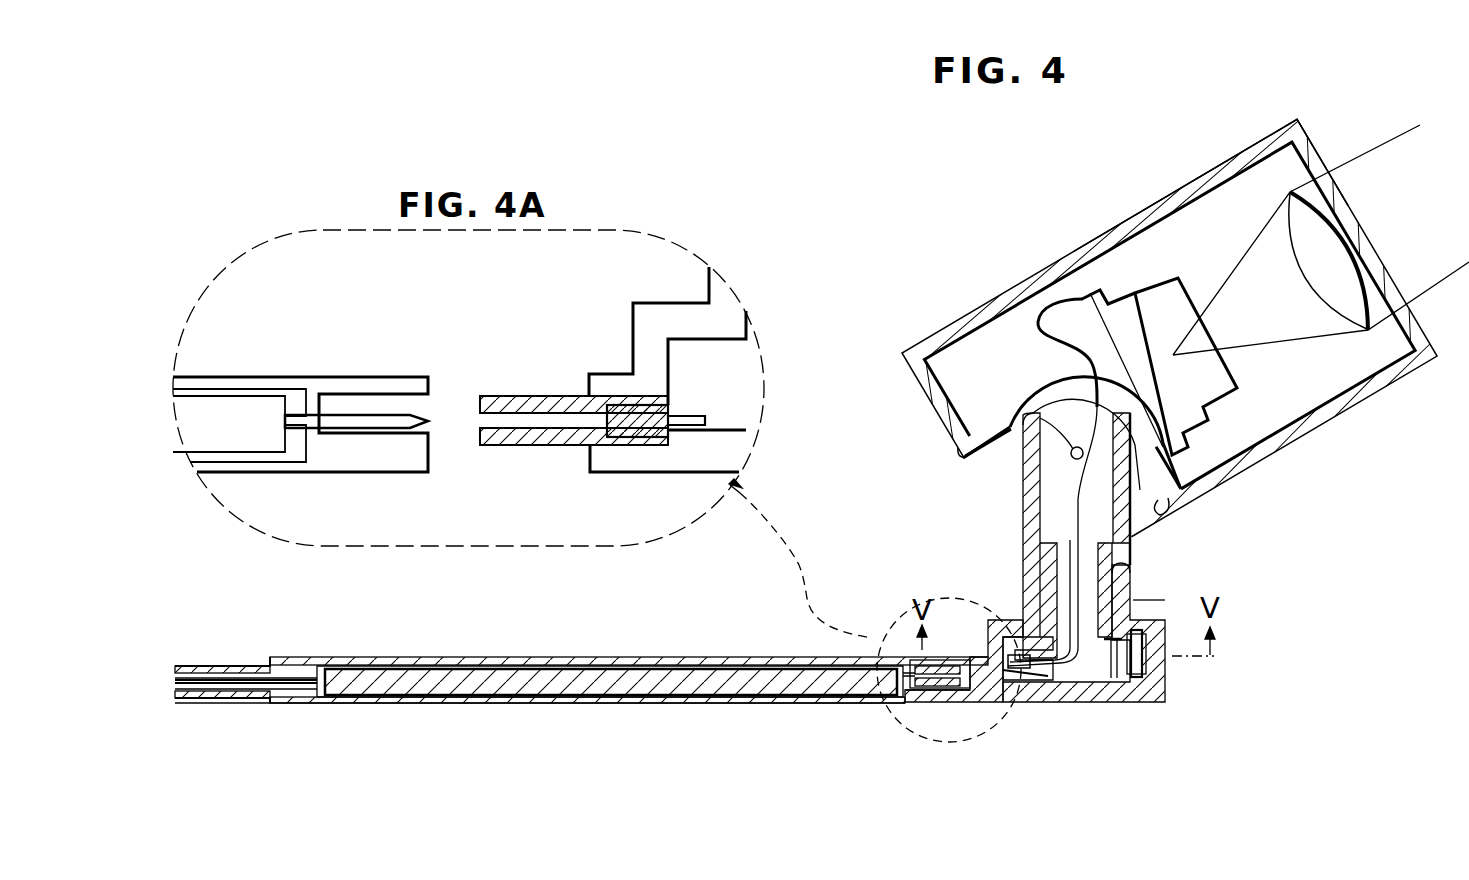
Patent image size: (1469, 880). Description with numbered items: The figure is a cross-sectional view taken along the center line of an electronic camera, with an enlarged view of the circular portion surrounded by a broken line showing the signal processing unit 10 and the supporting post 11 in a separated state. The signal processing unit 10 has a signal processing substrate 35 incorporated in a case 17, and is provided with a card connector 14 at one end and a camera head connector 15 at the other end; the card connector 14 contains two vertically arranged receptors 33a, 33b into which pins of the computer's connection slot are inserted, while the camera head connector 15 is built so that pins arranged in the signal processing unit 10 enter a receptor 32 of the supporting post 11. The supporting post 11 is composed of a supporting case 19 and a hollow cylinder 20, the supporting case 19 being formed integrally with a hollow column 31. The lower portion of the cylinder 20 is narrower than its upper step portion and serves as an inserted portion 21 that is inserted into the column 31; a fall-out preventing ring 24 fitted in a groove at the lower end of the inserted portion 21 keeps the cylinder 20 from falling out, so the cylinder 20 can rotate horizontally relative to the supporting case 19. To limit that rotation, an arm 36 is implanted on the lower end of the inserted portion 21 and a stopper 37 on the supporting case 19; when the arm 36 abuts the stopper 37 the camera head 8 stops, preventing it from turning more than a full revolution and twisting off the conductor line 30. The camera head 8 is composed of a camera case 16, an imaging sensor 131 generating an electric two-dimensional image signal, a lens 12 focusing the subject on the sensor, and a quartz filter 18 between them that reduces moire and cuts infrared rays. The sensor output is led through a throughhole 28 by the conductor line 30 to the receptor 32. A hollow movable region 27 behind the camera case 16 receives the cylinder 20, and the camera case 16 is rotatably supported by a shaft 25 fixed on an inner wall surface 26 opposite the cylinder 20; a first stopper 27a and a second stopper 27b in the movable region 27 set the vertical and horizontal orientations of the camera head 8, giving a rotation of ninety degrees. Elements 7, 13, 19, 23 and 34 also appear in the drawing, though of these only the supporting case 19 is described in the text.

The arm 7 is at (470, 657).
The camera head 8 is at (1178, 186).
The signal processing unit 10 is at (700, 657).
The supporting post 11 is at (1030, 527).
The lens 12 is at (1296, 156).
The arm bottom wall 13 is at (710, 703).
The card connector 14 is at (175, 680).
The camera head connector 15 is at (948, 648).
The camera case 16 is at (1236, 165).
The case 17 is at (785, 657).
The quartz filter 18 is at (1160, 303).
The supporting case 19 is at (940, 692).
The cylinder 20 is at (1052, 512).
The inserted portion 21 is at (1133, 573).
The base 23 is at (1095, 703).
The fall-out preventing ring 24 is at (1138, 690).
The shaft 25 is at (1040, 418).
The inner wall surface 26 is at (1000, 487).
The movable region 27 is at (992, 480).
The first stopper 27a is at (962, 457).
The second stopper 27b is at (1162, 505).
The throughhole 28 is at (1043, 377).
The conductor line 30 is at (1032, 323).
The column 31 is at (1140, 604).
The receptor 32 is at (1005, 640).
The receptor 33a is at (240, 668).
The receptor 33b is at (245, 700).
The connector 34 is at (936, 660).
The signal processing substrate 35 is at (610, 670).
The arm 36 is at (1010, 690).
The stopper 37 is at (1145, 672).
The imaging sensor 131 is at (1097, 293).